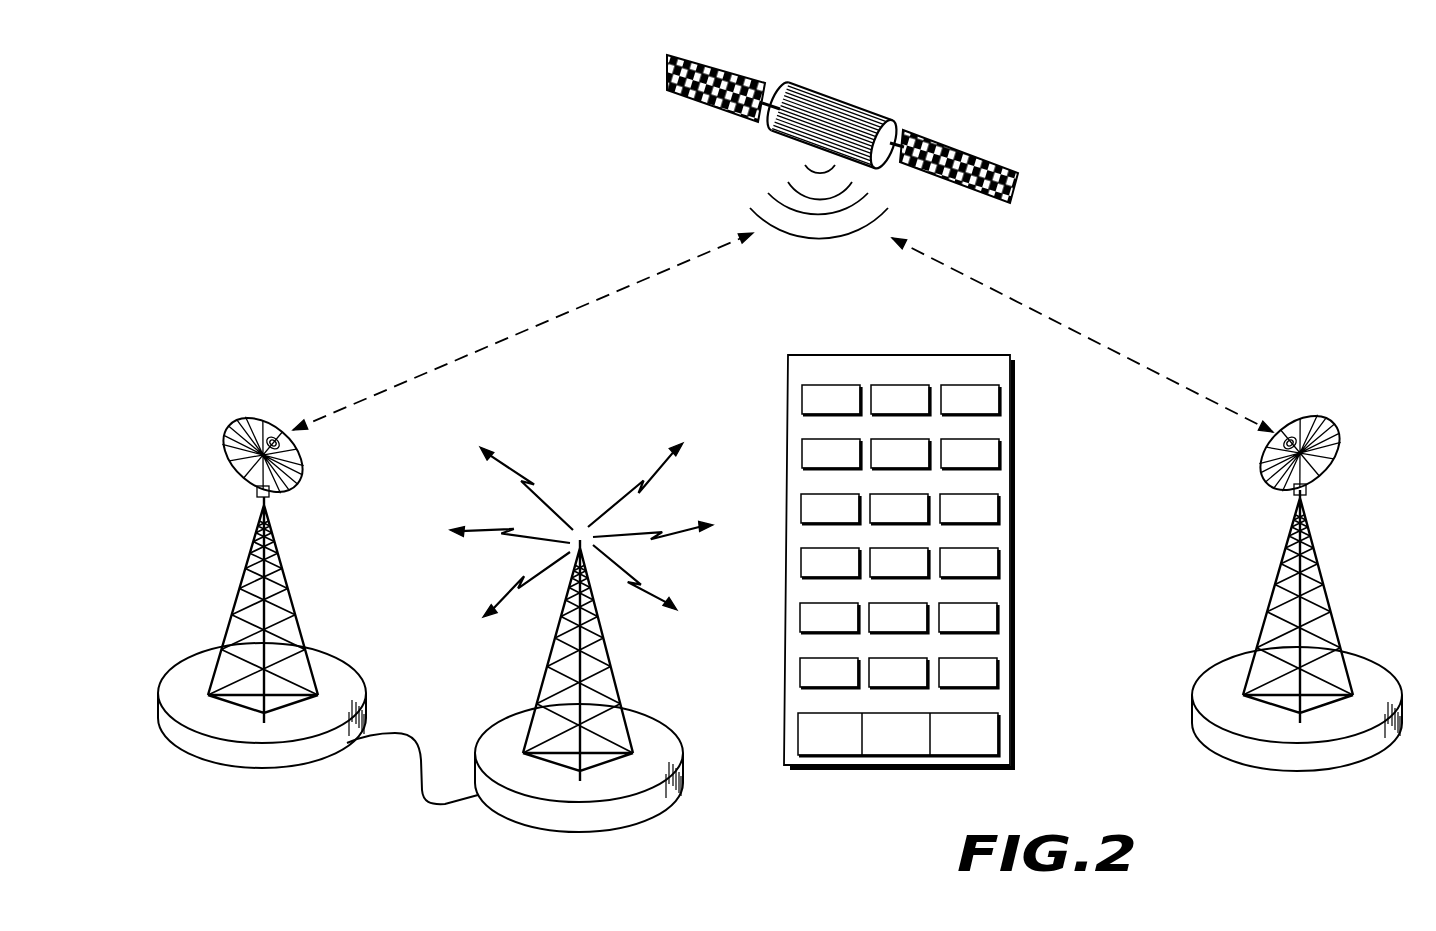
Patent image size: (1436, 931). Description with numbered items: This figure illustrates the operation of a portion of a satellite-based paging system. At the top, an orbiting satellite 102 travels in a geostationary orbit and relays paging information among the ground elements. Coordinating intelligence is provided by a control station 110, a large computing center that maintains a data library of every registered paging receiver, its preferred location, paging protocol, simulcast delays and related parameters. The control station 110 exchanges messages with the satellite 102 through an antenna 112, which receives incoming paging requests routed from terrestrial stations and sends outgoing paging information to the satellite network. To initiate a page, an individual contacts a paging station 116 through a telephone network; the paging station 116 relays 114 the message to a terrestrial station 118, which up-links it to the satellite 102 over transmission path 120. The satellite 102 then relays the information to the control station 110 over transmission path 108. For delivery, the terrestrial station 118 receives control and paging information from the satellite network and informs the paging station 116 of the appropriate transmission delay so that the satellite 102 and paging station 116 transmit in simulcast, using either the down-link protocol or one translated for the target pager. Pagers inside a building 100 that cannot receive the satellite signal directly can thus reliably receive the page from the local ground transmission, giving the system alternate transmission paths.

The building 100 is at (789, 355).
The satellite 102 is at (885, 110).
The transmission path 108 is at (1013, 302).
The control station 110 is at (1217, 667).
The antenna 112 is at (1337, 422).
The relay 114 is at (420, 787).
The paging station 116 is at (643, 717).
The terrestrial station 118 is at (323, 647).
The transmission path 120 is at (623, 288).